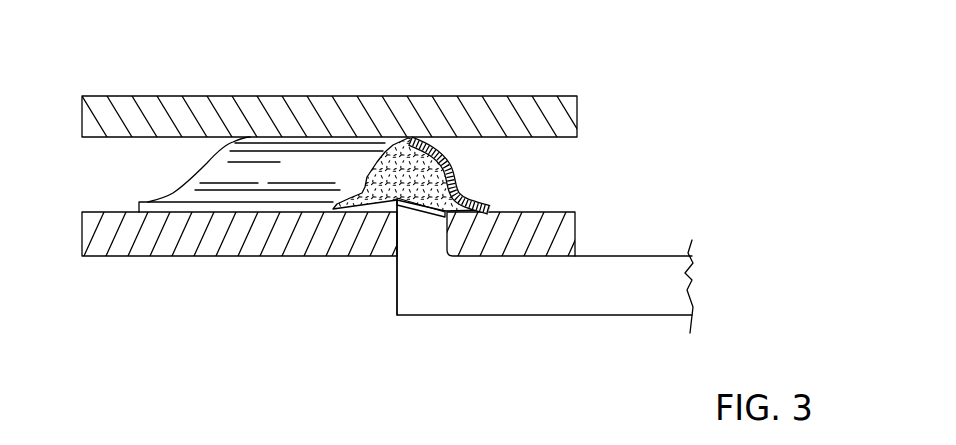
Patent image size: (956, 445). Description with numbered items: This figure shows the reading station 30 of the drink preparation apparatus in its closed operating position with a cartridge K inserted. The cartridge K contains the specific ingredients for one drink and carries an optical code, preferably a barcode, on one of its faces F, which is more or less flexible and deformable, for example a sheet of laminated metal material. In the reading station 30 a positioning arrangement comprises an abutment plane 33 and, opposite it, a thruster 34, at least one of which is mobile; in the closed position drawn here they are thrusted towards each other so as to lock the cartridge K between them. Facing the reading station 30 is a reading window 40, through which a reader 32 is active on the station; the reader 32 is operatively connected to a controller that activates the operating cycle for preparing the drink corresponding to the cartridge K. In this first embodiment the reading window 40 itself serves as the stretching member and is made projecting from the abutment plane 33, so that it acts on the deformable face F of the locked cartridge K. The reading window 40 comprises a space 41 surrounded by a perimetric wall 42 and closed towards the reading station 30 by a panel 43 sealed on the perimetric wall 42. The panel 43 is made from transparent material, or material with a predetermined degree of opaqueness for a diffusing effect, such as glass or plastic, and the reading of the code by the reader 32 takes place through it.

The reading station 30 is at (562, 61).
The reader 32 is at (609, 298).
The abutment plane 33 is at (125, 243).
The thruster 34 is at (108, 105).
The reading window 40 is at (413, 212).
The space 41 is at (450, 237).
The perimetric wall 42 is at (437, 247).
The panel 43 is at (453, 176).
The cartridge K is at (220, 167).
The face F is at (373, 208).